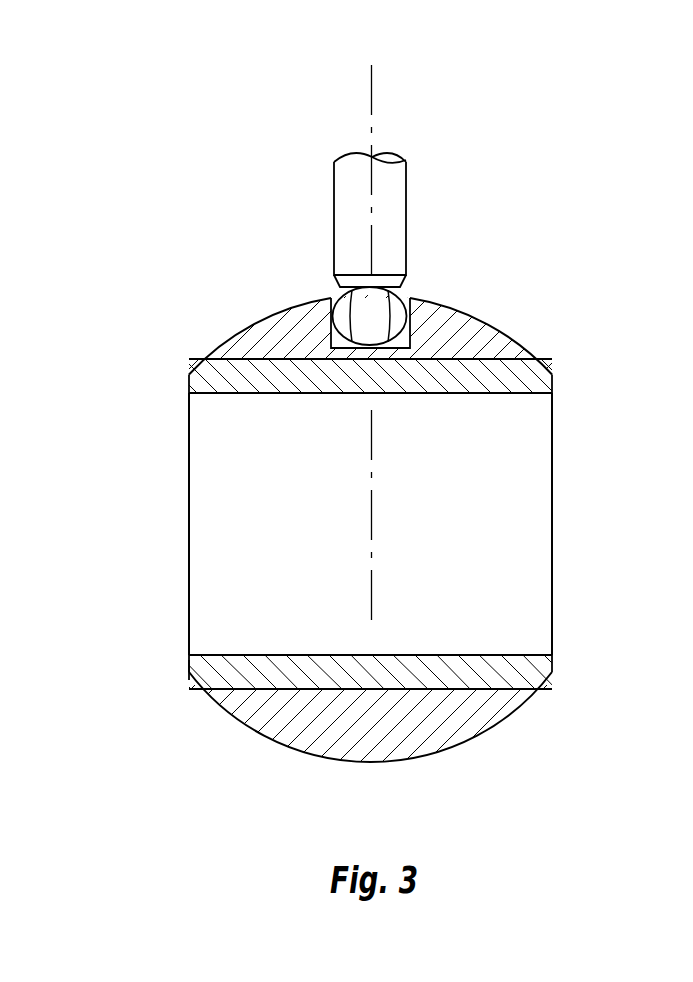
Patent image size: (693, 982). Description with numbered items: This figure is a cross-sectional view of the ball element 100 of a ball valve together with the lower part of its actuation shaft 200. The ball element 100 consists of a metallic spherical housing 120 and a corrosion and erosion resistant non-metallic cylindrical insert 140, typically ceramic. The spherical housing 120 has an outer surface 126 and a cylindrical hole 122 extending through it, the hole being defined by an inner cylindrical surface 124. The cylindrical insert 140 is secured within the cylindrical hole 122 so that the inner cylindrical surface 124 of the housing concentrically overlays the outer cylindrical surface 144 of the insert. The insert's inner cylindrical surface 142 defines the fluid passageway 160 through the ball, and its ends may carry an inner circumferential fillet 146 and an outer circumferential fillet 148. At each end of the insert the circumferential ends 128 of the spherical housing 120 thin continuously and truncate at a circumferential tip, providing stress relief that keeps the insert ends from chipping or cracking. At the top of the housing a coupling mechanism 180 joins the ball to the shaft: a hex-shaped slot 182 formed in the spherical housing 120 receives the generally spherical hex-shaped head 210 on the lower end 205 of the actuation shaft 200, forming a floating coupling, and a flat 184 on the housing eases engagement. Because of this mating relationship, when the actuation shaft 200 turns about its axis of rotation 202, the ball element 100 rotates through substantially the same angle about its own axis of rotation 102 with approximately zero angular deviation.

The ball element 100 is at (352, 528).
The axis of rotation of ball element 102 is at (372, 440).
The spherical housing 120 is at (301, 722).
The cylindrical hole 122 is at (272, 547).
The inner cylindrical surface of spherical housing 124 is at (351, 688).
The outer surface 126 is at (225, 708).
The circumferential ends 128 is at (237, 342).
The cylindrical insert 140 is at (367, 409).
The inner cylindrical surface 142 is at (503, 393).
The outer cylindrical surface 144 is at (498, 690).
The inner circumferential fillet 146 is at (192, 652).
The outer circumferential fillet 148 is at (190, 678).
The fluid passageway 160 is at (474, 539).
The coupling mechanism 180 is at (396, 233).
The hex-shaped slot 182 is at (410, 340).
The flat 184 is at (317, 296).
The actuation shaft 200 is at (406, 181).
The axis of rotation of actuation shaft 202 is at (372, 93).
The lower end 205 is at (407, 272).
The hex-shaped head 210 is at (377, 313).